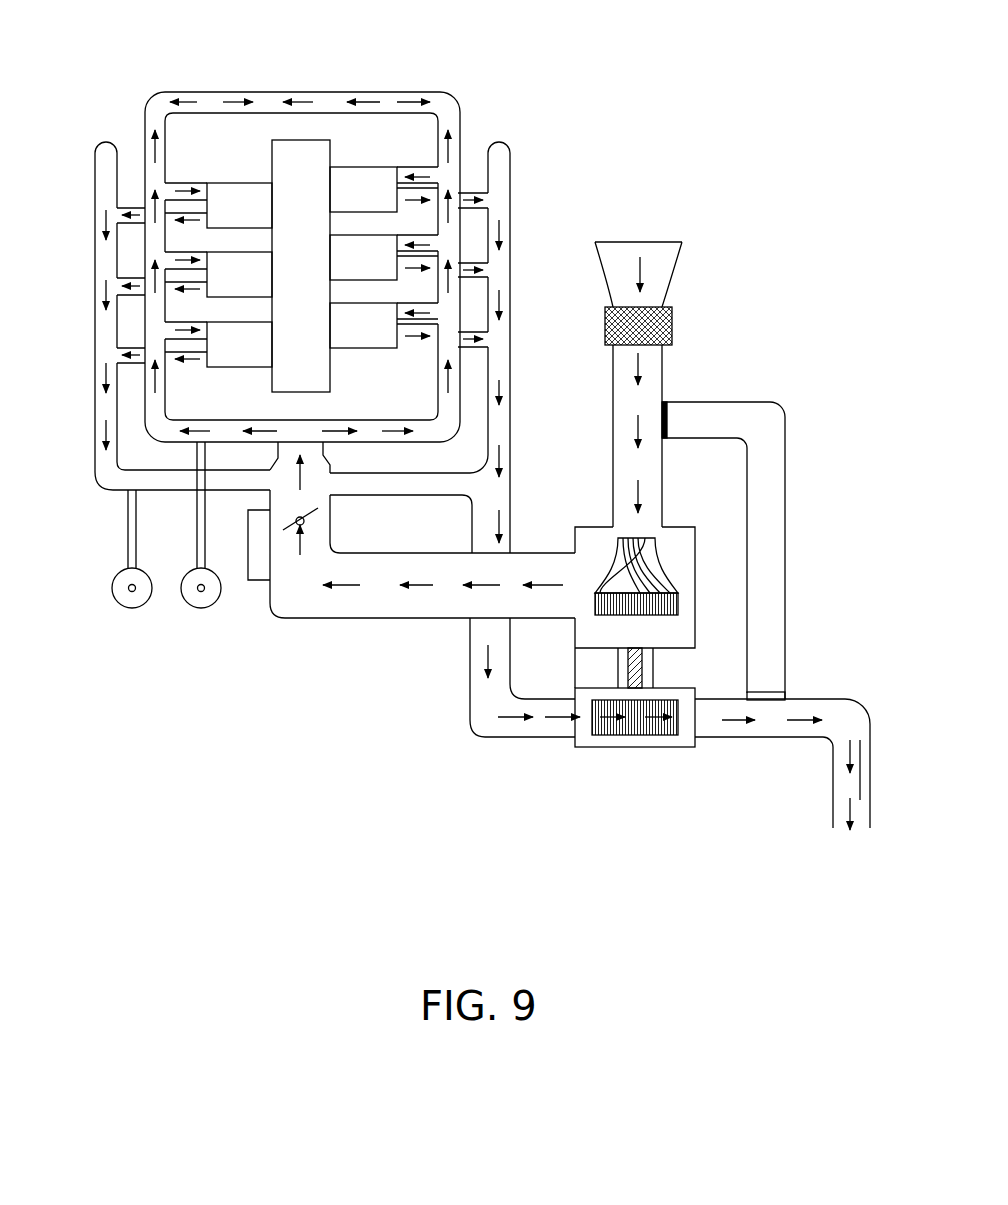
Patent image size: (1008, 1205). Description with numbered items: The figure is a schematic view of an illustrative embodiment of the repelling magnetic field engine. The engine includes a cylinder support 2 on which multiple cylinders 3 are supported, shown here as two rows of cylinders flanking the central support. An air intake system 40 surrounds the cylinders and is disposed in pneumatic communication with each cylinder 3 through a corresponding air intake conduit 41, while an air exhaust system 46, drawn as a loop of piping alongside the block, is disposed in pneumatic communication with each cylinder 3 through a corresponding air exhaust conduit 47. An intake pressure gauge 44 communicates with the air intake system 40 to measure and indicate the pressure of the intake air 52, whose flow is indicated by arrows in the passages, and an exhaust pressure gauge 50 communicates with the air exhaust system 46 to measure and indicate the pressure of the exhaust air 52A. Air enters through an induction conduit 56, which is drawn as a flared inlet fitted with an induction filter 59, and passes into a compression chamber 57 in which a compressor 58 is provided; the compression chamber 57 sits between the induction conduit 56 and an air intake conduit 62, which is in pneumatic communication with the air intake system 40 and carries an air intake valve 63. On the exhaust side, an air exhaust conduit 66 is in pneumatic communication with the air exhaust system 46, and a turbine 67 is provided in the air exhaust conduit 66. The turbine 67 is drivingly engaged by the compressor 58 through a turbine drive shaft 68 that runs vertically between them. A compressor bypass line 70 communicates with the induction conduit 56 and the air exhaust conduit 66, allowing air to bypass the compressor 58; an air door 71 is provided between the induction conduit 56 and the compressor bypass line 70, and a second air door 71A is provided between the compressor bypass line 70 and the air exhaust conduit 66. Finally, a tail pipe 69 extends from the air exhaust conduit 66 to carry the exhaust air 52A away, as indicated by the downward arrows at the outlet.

The cylinder support 2 is at (330, 373).
The cylinders 3 is at (390, 243).
The air intake system 40 is at (183, 90).
The air intake conduit 41 is at (173, 263).
The intake pressure gauge 44 is at (200, 610).
The air exhaust system 46 is at (115, 492).
The air exhaust conduit 47 is at (125, 285).
The exhaust pressure gauge 50 is at (130, 610).
The intake air 52 is at (378, 102).
The exhaust air 52A is at (100, 437).
The induction conduit 56 is at (613, 403).
The compression chamber 57 is at (595, 527).
The compressor 58 is at (678, 605).
The induction filter 59 is at (672, 332).
The air intake conduit 62 is at (390, 548).
The air intake valve 63 is at (283, 533).
The air exhaust conduit 66 is at (498, 737).
The turbine 67 is at (628, 735).
The turbine drive shaft 68 is at (627, 663).
The tail pipe 69 is at (833, 817).
The compressor bypass line 70 is at (785, 587).
The air door 71 is at (667, 418).
The air door 71A is at (765, 692).